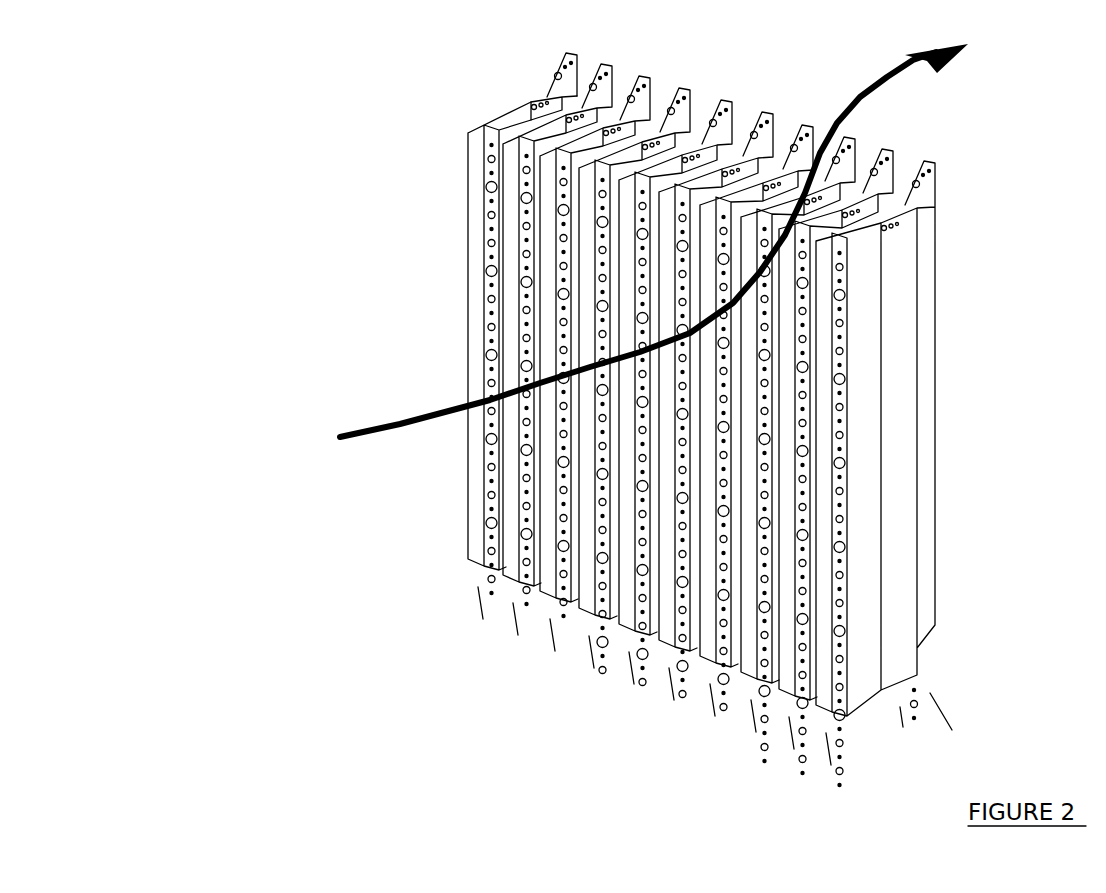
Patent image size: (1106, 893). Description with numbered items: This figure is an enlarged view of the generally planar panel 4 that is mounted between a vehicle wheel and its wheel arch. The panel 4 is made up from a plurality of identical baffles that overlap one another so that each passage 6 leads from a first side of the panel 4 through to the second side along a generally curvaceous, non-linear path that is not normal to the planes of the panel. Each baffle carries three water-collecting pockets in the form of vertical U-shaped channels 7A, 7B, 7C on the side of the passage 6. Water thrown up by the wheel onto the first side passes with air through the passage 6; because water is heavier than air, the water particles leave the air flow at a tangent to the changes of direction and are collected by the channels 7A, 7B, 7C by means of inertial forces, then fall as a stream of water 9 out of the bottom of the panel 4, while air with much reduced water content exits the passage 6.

The panel 4 is at (592, 370).
The passage 6 is at (643, 248).
The first channel 7A is at (460, 297).
The pocket 7B is at (531, 102).
The pocket 7C is at (560, 63).
The stream of water 9 is at (682, 723).